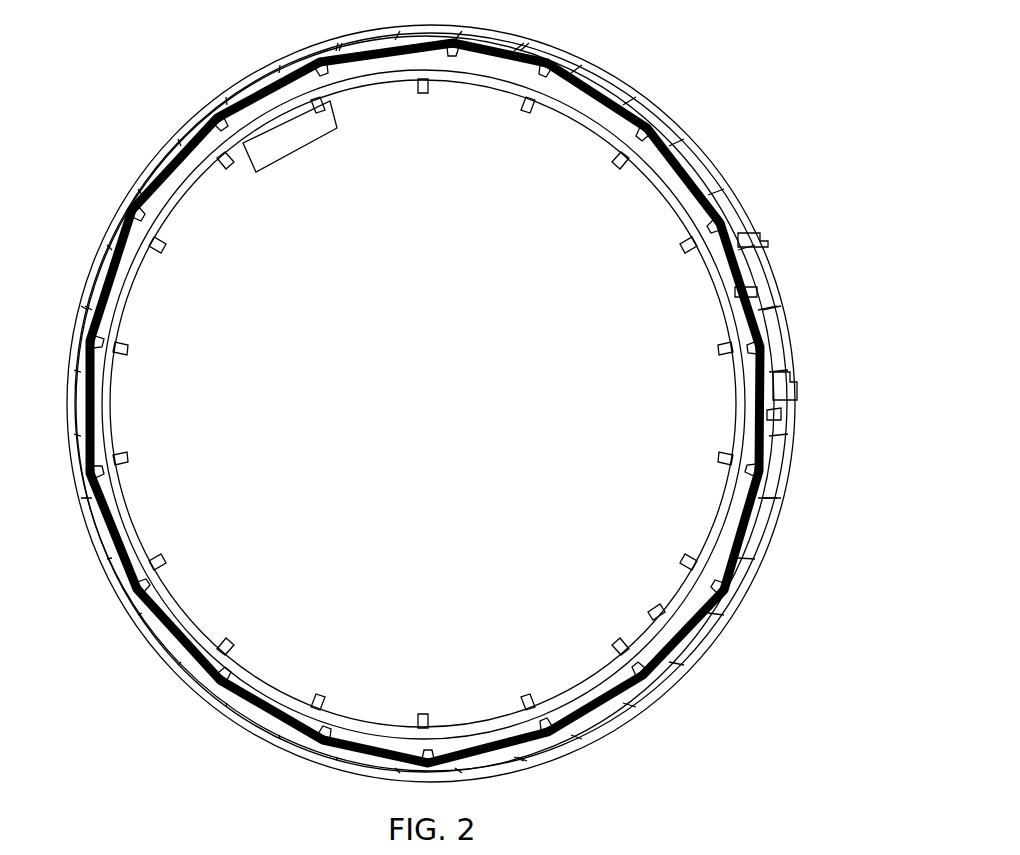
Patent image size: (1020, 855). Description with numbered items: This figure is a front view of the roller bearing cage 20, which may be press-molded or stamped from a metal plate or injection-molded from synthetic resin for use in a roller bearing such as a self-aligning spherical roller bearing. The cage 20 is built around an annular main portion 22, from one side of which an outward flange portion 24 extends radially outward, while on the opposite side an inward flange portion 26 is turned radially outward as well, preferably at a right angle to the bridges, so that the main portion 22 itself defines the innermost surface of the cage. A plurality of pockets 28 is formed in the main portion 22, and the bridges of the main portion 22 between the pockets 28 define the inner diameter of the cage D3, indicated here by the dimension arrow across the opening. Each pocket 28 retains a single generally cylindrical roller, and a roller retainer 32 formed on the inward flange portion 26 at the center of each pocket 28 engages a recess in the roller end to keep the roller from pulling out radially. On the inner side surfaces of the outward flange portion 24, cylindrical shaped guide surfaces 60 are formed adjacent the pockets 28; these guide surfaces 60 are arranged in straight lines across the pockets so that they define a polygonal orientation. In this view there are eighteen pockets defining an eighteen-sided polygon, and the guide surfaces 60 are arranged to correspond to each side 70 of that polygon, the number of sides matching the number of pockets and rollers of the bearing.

The cage 20 is at (284, 74).
The main portion 22 is at (440, 88).
The outward flange portion 24 is at (188, 124).
The inward flange portion 26 is at (132, 208).
The pocket 28 is at (293, 155).
The roller retainer 32 is at (180, 174).
The cylindrical shaped guide surface 60 is at (594, 82).
The side of the polygon 70 is at (640, 122).
The inner diameter of the cage D3 is at (428, 96).